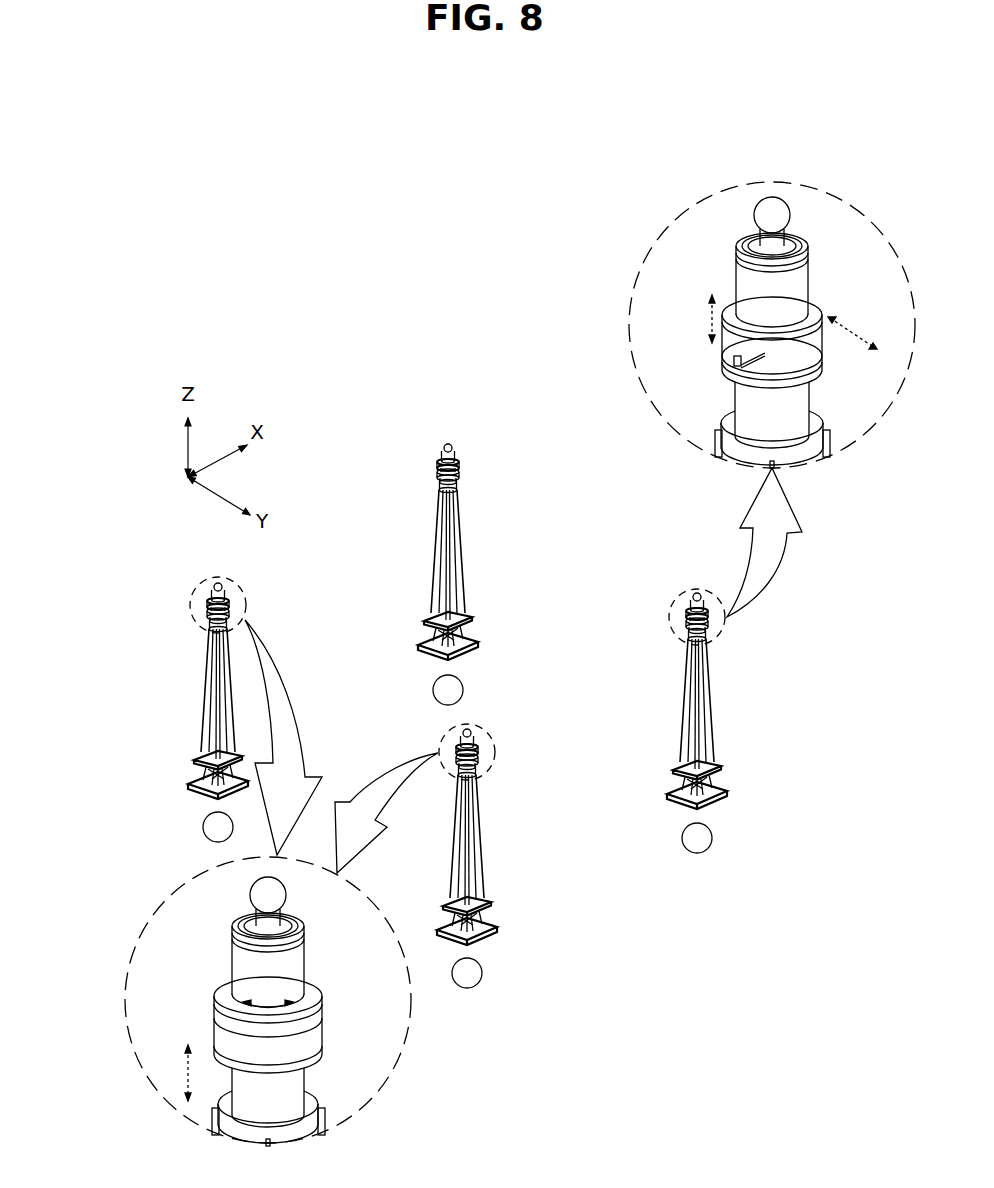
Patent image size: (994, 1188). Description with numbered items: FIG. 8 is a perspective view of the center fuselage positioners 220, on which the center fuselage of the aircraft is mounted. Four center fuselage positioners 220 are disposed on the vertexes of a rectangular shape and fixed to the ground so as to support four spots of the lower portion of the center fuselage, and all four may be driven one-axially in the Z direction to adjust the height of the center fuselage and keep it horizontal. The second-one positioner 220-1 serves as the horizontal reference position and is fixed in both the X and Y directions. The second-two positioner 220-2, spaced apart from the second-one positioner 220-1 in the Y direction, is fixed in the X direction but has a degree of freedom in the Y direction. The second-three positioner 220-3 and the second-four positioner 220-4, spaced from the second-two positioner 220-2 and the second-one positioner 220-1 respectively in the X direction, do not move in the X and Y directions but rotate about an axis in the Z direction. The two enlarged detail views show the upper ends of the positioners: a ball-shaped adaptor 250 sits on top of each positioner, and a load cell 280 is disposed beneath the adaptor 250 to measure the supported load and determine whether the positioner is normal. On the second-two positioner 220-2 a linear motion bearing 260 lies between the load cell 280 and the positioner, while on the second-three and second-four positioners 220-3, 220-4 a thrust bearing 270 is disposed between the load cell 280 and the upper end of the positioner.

The center fuselage positioners 220 is at (357, 468).
The second-1 positioner 220-1 is at (455, 505).
The second-2 positioner 220-2 is at (692, 688).
The second-3 positioner 220-3 is at (473, 837).
The second-4 positioner 220-4 is at (212, 658).
The adaptor 250 is at (775, 212).
The linear motion (LM) bearing 260 is at (723, 350).
The thrust bearing 270 is at (310, 992).
The load cell 280 is at (797, 287).